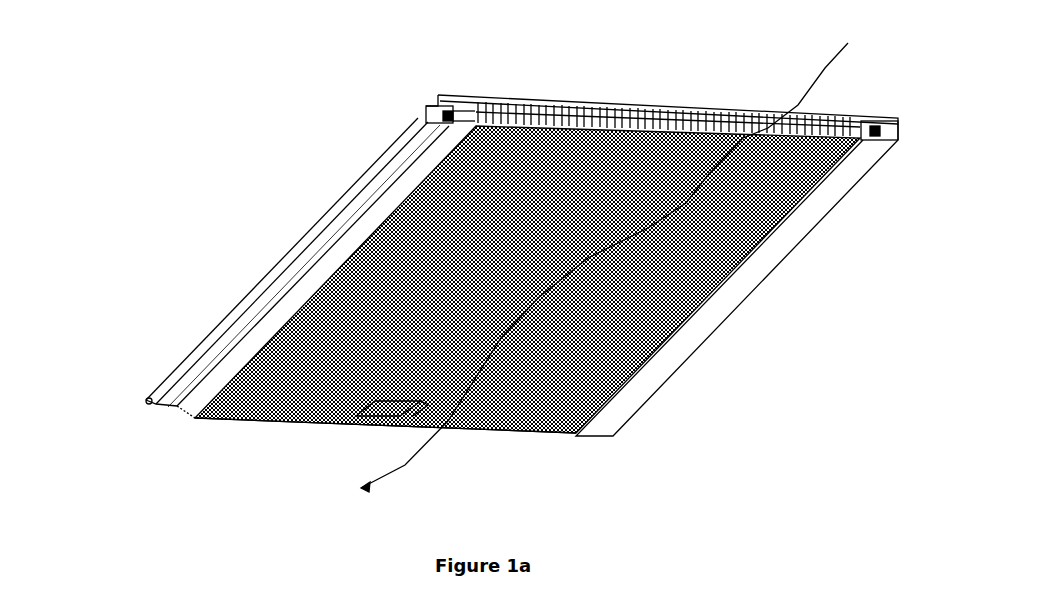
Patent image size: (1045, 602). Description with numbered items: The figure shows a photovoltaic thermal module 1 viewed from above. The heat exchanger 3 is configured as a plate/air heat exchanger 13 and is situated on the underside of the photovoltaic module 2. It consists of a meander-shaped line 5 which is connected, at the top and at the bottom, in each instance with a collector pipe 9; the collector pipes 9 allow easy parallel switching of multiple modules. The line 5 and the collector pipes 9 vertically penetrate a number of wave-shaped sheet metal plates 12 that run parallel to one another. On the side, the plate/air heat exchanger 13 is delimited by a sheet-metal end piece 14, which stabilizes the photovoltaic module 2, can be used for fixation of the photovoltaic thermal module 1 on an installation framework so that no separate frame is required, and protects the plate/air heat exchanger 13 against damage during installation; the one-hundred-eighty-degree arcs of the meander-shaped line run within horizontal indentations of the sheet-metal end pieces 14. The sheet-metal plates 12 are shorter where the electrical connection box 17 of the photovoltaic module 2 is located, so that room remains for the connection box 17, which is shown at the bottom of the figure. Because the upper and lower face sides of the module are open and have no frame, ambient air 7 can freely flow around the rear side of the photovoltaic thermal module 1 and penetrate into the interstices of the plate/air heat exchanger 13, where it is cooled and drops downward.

The photovoltaic thermal module 1 is at (268, 268).
The photovoltaic module 2 is at (593, 93).
The heat exchanger 3 is at (637, 333).
The meander-shaped line 5 is at (332, 214).
The ambient air 7 is at (597, 263).
The collector pipe 9 is at (423, 103).
The wave-shaped sheet metal plate 12 is at (250, 393).
The plate/air heat exchanger 13 is at (637, 333).
The sheet-metal end piece 14 is at (763, 247).
The electrical connection box 17 is at (360, 408).